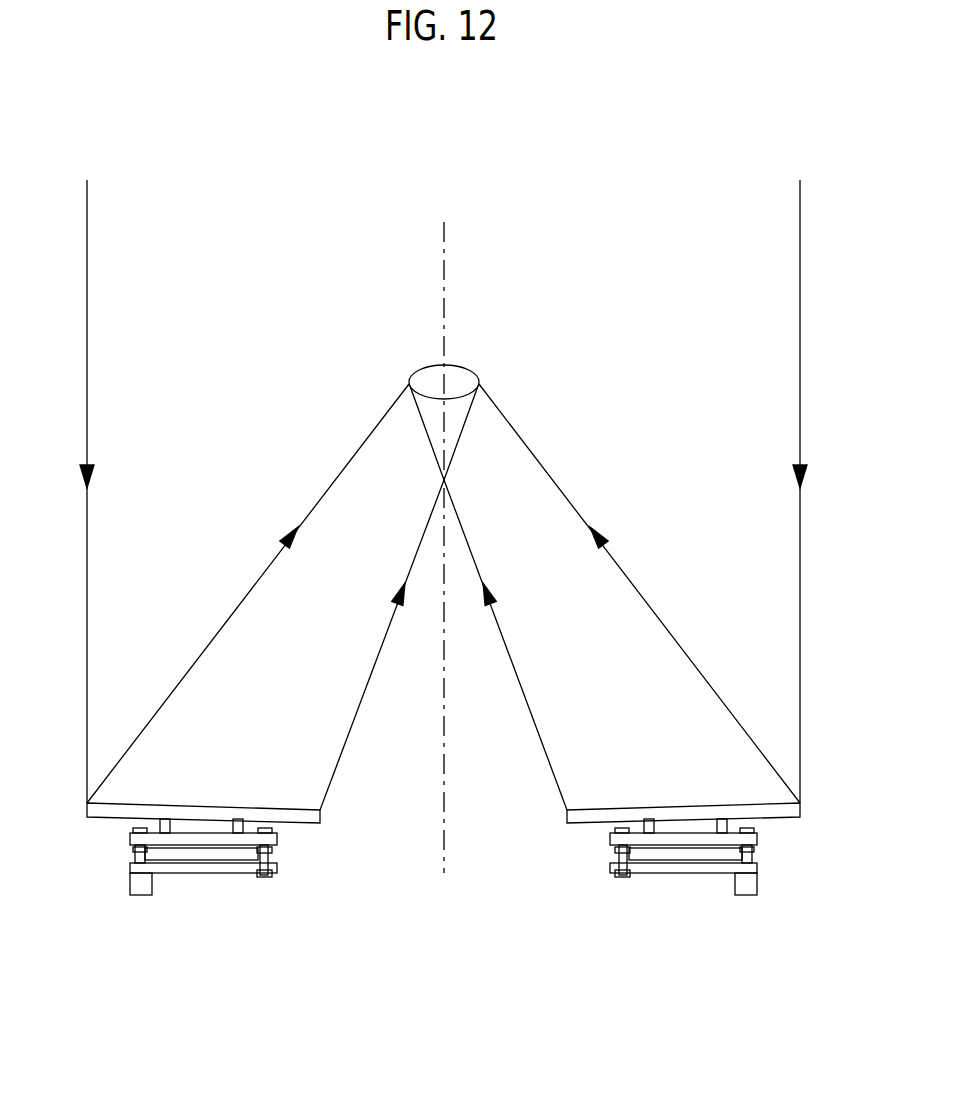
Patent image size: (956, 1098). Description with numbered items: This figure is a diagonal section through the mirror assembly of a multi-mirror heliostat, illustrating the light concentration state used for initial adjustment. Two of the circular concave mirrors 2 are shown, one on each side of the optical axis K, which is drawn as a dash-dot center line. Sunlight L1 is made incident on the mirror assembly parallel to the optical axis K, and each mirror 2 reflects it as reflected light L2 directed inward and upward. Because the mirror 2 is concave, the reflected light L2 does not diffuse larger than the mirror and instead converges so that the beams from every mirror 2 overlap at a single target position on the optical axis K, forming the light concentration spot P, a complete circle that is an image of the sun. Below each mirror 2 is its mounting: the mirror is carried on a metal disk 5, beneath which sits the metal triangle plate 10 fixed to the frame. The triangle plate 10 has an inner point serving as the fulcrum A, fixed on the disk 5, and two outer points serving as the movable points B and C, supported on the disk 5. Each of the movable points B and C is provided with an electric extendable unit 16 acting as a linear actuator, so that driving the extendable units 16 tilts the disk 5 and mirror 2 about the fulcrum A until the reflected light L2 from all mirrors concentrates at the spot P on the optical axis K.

The mirror 2 is at (208, 807).
The disk 5 is at (190, 860).
The triangle plate 10 is at (222, 874).
The electric extendable unit 16 is at (130, 893).
The fulcrum A is at (273, 860).
The movable point B is at (445, 860).
The movable point C is at (133, 858).
The optical axis K is at (444, 533).
The light concentration spot P is at (438, 364).
The sunlight L1 is at (87, 362).
The reflected light L2 is at (257, 575).